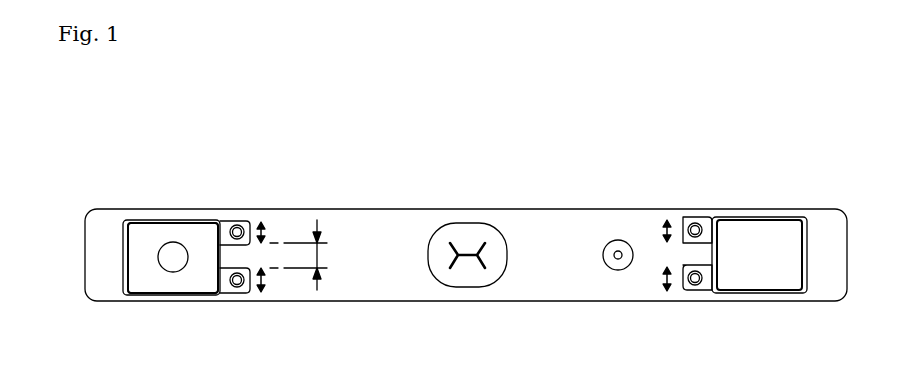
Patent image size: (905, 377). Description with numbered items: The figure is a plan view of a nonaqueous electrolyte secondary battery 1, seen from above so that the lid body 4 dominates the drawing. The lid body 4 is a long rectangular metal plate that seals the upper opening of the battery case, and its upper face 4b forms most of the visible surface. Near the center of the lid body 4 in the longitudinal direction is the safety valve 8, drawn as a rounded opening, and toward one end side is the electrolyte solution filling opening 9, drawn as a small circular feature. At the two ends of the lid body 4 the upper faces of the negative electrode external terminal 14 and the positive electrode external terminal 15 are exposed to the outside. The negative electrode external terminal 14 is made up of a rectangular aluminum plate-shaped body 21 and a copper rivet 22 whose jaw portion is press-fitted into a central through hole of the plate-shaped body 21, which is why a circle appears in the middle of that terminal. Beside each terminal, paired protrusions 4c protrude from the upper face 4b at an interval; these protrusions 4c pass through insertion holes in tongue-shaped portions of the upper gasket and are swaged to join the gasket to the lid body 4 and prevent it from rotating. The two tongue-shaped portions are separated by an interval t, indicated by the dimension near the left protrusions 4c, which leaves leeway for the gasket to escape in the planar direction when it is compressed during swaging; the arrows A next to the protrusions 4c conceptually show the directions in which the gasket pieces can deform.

The nonaqueous electrolyte secondary battery 1 is at (781, 136).
The lid body 4 is at (306, 210).
The upper face 4b is at (374, 220).
The protrusions 4c is at (238, 228).
The safety valve 8 is at (467, 235).
The electrolyte solution filling opening 9 is at (627, 243).
The negative electrode external terminal 14 is at (155, 230).
The positive electrode external terminal 15 is at (758, 228).
The plate-shaped body 21 is at (198, 228).
The rivet 22 is at (181, 265).
The arrows A is at (270, 277).
The interval t is at (302, 258).